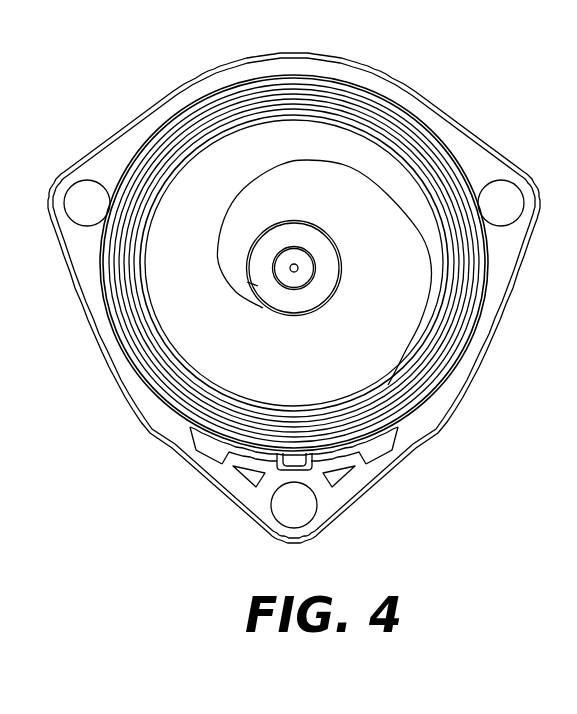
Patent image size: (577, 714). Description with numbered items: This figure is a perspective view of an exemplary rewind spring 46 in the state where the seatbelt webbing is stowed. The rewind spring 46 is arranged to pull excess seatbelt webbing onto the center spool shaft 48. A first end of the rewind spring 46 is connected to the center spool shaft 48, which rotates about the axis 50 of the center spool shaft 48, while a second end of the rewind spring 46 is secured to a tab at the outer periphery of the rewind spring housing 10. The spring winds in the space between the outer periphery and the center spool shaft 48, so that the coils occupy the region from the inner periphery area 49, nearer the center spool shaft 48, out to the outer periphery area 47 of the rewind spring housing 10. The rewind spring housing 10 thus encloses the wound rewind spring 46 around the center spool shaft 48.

The rewind spring housing 10 is at (367, 490).
The rewind spring 46 is at (477, 337).
The outer periphery area 47 is at (407, 443).
The center spool shaft 48 is at (295, 300).
The inner periphery area 49 is at (323, 198).
The axis 50 is at (297, 266).